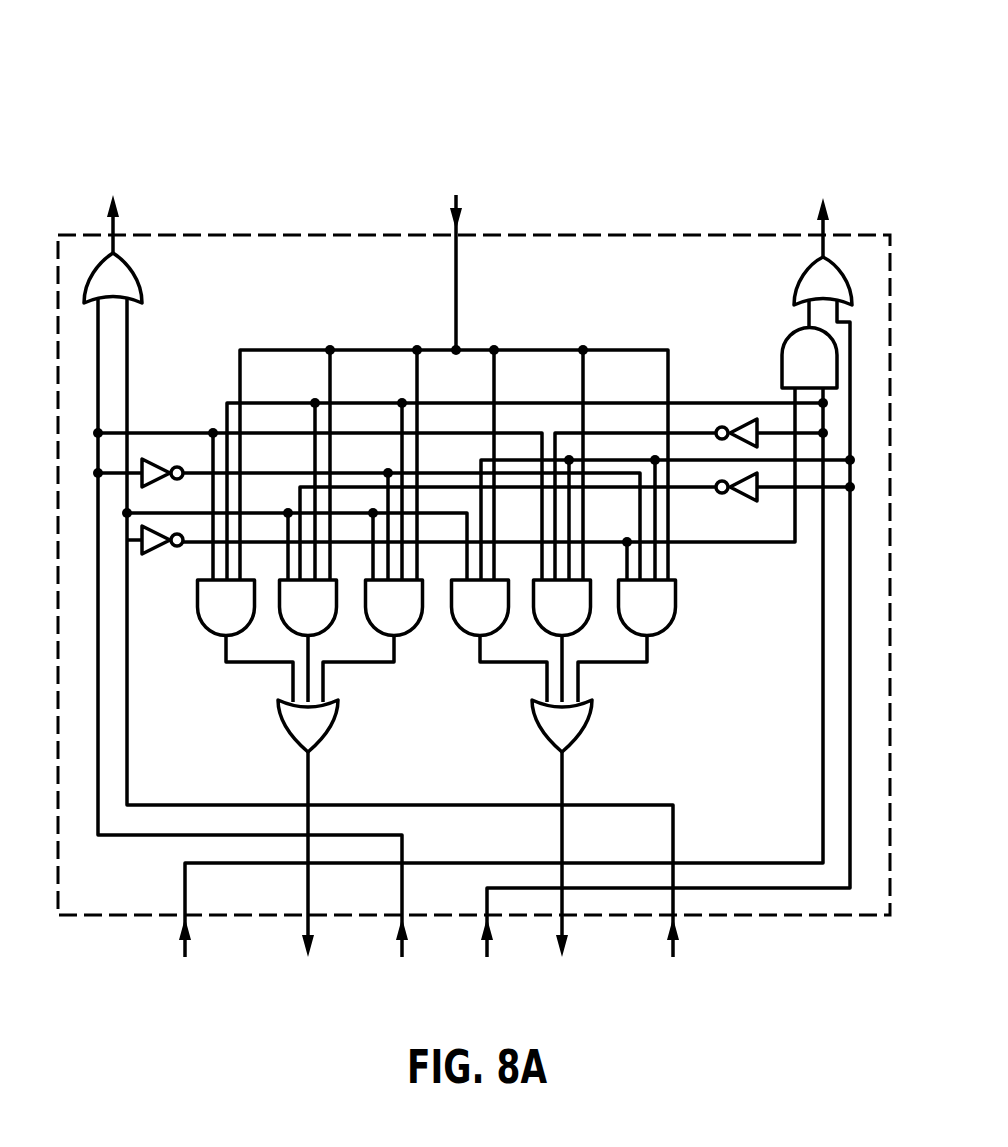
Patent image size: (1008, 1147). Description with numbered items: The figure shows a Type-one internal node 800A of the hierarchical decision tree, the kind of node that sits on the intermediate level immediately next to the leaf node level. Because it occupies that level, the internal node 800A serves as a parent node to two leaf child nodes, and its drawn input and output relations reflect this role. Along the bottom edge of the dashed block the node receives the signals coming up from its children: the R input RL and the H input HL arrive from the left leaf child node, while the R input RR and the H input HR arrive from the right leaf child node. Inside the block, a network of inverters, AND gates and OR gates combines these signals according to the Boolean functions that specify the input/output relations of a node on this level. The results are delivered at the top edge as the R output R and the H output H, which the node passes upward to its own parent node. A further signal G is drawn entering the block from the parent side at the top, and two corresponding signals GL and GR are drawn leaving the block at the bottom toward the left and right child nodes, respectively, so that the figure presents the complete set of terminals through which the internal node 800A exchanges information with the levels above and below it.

The Type-1 internal node 800A is at (474, 507).
The H output H is at (113, 226).
The G input signal G is at (458, 249).
The R output R is at (823, 227).
The R input from left leaf child node RL is at (187, 962).
The left G output signal GL is at (310, 881).
The H input from left leaf child node HL is at (405, 962).
The R input from right leaf child node RR is at (489, 962).
The right G output signal GR is at (563, 880).
The H input from right leaf child node HR is at (677, 962).